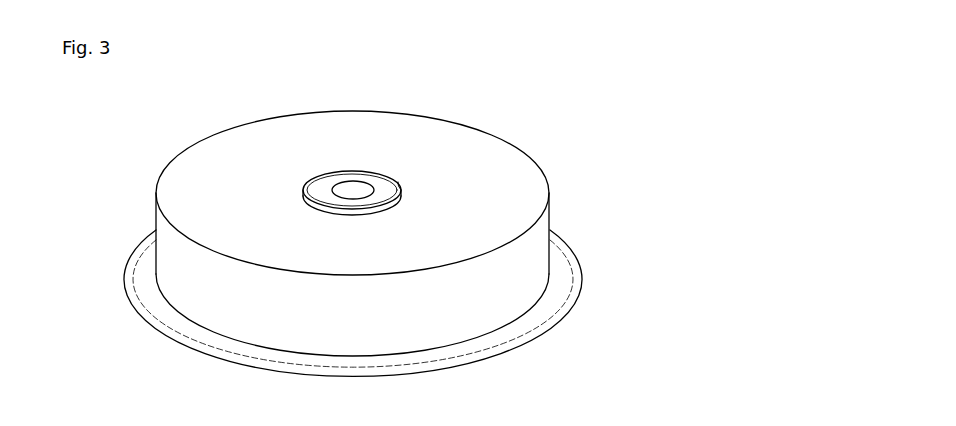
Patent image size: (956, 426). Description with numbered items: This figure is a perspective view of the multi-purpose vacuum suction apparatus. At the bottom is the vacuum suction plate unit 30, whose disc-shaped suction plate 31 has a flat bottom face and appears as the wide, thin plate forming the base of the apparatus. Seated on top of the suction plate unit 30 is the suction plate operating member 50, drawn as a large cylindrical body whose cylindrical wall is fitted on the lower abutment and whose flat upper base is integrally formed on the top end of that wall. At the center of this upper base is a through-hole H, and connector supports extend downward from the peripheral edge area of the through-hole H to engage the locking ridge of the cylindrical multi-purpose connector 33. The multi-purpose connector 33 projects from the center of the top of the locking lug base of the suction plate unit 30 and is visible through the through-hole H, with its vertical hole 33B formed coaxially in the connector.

The vacuum suction plate unit 30 is at (134, 235).
The suction plate 31 is at (497, 342).
The multi-purpose connector 33 is at (320, 183).
The vertical hole 33B is at (353, 187).
The suction plate operating member 50 is at (553, 150).
The through-hole H is at (398, 182).